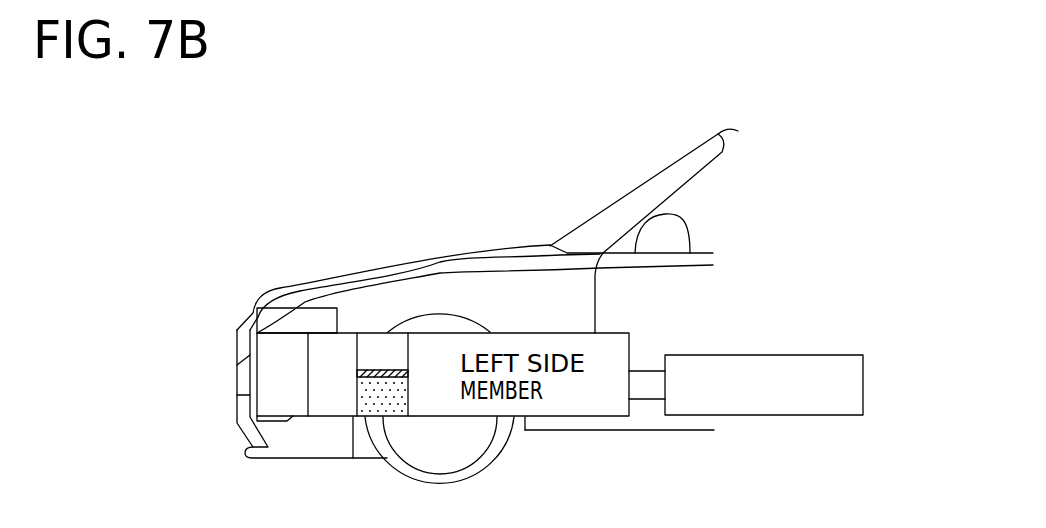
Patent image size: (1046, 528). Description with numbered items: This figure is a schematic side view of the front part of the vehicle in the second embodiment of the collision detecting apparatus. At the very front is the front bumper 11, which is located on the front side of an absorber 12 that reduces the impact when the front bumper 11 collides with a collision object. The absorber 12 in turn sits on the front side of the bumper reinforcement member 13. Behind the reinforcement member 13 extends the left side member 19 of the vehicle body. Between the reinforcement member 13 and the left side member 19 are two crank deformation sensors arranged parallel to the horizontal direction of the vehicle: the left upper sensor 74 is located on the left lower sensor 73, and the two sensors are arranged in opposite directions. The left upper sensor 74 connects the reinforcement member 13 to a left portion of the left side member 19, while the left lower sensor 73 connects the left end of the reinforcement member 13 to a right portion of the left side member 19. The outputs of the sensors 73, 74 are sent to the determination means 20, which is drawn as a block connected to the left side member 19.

The front bumper 11 is at (263, 447).
The absorber 12 is at (285, 309).
The bumper reinforcement member 13 is at (322, 333).
The left side member 19 is at (517, 332).
The determination means 20 is at (820, 355).
The left lower sensor 73 is at (380, 455).
The left upper sensor 74 is at (367, 332).